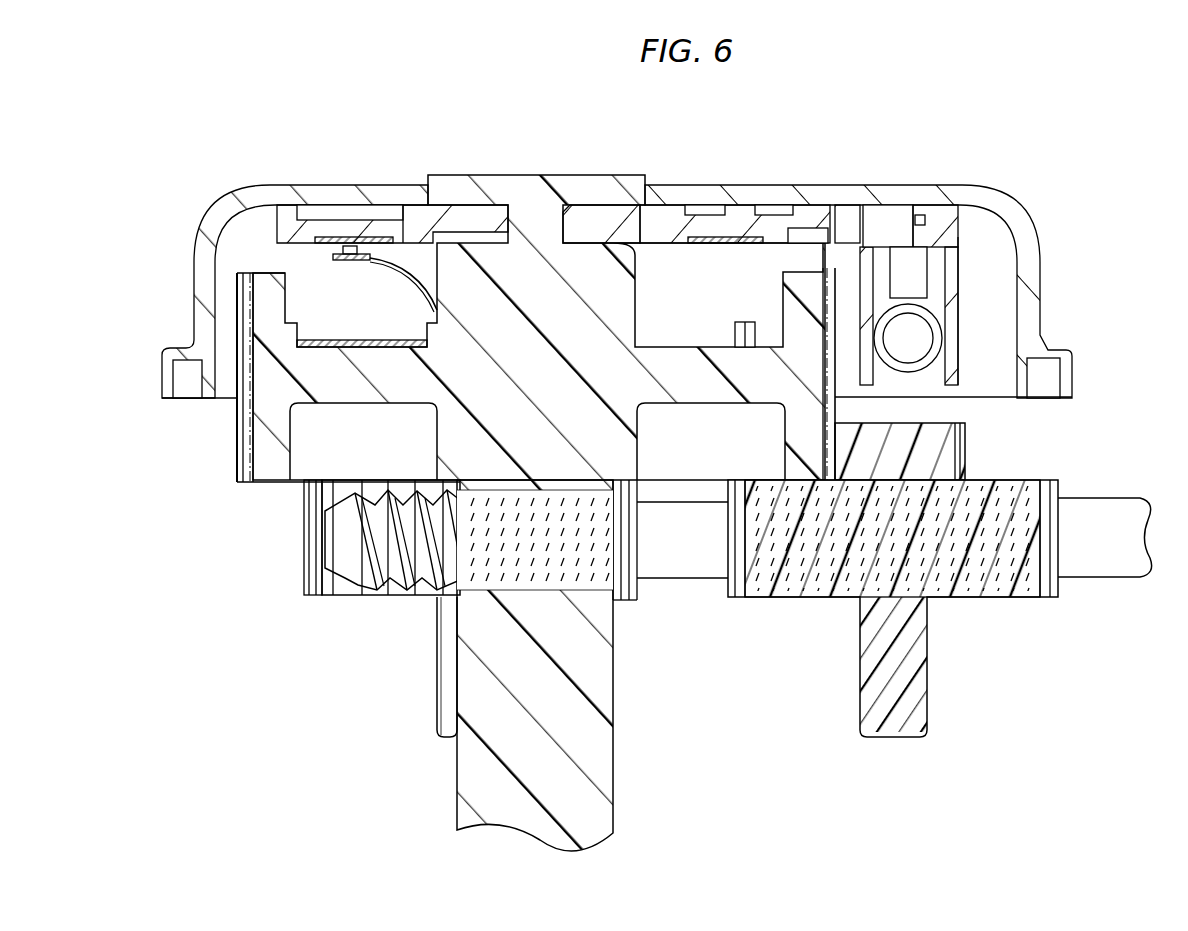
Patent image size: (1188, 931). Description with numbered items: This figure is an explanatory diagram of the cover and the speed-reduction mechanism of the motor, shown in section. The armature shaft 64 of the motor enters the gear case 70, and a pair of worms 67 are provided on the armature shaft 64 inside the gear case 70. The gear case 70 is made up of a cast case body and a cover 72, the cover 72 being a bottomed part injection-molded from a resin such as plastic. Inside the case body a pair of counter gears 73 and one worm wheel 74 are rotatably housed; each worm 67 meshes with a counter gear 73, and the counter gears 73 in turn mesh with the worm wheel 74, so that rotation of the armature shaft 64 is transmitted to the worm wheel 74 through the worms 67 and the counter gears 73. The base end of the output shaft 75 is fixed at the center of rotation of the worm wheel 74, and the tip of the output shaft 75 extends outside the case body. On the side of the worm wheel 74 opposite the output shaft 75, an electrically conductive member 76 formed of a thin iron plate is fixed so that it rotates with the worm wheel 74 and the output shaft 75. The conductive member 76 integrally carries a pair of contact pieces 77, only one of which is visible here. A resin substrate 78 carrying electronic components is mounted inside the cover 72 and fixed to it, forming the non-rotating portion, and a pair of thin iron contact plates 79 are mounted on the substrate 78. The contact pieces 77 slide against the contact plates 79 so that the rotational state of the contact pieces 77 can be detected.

The gear case 70 is at (1026, 208).
The cover 72 is at (1024, 305).
The counter gears 73 is at (303, 556).
The worm wheel 74 is at (267, 437).
The output shaft 75 is at (502, 780).
The electrically conductive member 76 is at (338, 340).
The contact pieces 77 is at (392, 293).
The substrate 78 is at (615, 228).
The contact plates 79 is at (322, 237).
The worms 67 is at (353, 567).
The armature shaft 64 is at (1107, 525).